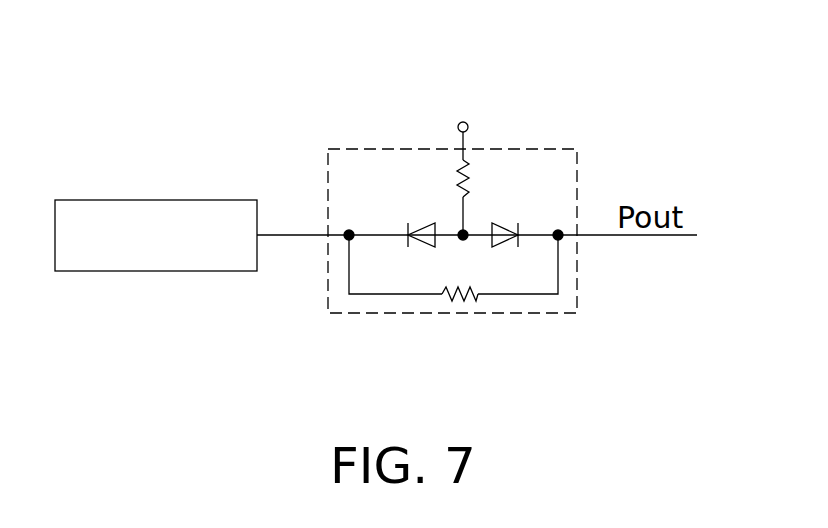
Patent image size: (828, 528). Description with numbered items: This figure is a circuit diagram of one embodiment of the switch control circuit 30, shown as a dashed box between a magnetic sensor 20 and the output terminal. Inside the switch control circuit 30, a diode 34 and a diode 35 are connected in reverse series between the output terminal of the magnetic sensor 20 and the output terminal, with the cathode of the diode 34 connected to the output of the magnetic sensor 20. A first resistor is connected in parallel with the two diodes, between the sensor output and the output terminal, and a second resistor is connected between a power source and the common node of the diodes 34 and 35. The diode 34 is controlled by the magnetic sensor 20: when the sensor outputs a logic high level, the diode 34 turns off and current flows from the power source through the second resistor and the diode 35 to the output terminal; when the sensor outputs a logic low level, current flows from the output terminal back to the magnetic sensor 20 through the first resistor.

The magnetic sensor 20 is at (112, 199).
The switch control circuit 30 is at (456, 211).
The diode 34 is at (425, 228).
The diode 35 is at (507, 227).